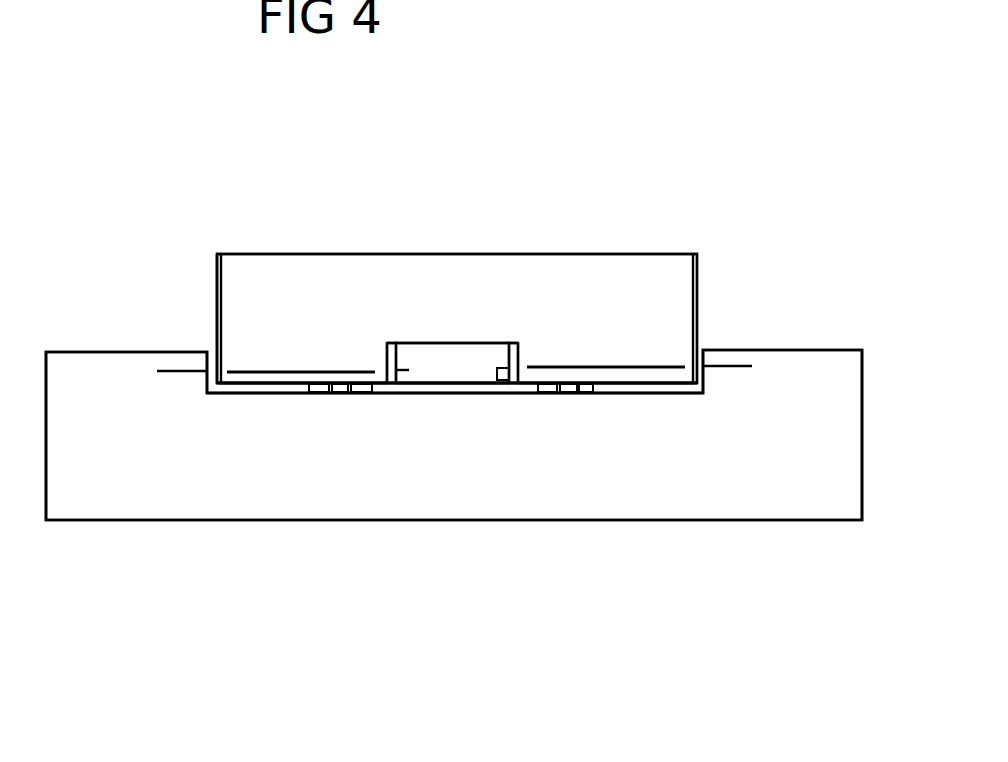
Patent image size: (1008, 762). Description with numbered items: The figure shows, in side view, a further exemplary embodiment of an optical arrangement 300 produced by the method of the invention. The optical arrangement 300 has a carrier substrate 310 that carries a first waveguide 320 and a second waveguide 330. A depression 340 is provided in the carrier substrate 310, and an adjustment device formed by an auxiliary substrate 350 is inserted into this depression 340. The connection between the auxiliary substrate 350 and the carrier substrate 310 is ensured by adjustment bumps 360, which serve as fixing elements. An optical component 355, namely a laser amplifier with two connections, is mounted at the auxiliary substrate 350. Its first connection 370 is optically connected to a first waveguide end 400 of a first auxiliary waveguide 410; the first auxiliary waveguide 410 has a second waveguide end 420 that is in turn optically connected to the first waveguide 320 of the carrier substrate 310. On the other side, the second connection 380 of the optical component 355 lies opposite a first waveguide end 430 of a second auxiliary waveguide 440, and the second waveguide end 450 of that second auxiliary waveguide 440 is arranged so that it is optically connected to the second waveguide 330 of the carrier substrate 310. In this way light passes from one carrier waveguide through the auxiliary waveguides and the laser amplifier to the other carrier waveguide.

The optical arrangement 300 is at (712, 563).
The carrier substrate 310 is at (828, 362).
The first waveguide 320 is at (733, 372).
The second waveguide 330 is at (170, 372).
The depression 340 is at (400, 395).
The auxiliary substrate 350 is at (658, 272).
The optical component 355 is at (452, 386).
The adjustment bumps 360 is at (360, 393).
The first connection 370 is at (498, 378).
The second connection 380 is at (405, 368).
The first waveguide end 400 is at (536, 360).
The first auxiliary waveguide 410 is at (582, 363).
The second waveguide end 420 is at (677, 363).
The first waveguide end 430 is at (372, 363).
The second auxiliary waveguide 440 is at (295, 372).
The second waveguide end 450 is at (240, 368).